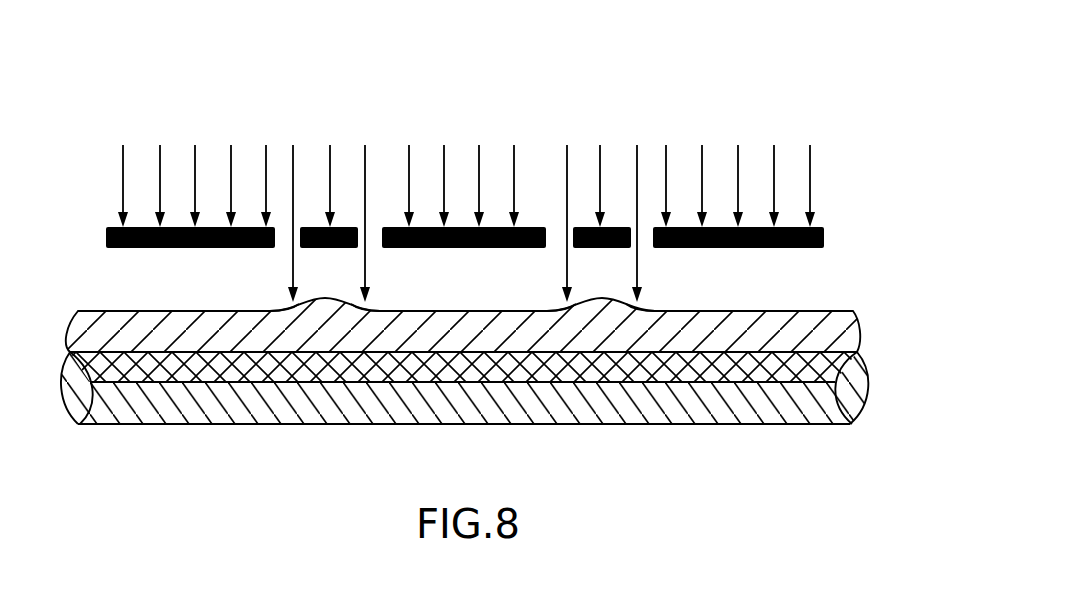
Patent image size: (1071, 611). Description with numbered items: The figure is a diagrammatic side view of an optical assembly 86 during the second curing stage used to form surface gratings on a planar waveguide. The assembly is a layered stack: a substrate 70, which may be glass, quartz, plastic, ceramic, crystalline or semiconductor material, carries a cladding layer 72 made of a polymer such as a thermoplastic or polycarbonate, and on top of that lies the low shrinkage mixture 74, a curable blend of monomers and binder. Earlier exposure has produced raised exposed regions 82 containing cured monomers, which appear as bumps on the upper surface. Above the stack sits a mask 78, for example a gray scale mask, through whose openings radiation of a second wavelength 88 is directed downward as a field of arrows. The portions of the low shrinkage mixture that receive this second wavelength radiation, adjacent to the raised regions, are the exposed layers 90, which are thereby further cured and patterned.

The substrate 70 is at (823, 413).
The cladding layer 72 is at (823, 368).
The low shrinkage mixture 74 is at (844, 320).
The mask 78 is at (106, 238).
The exposed regions 82 is at (602, 296).
The optical assembly 86 is at (776, 56).
The radiation of second wavelength 88 is at (565, 162).
The low shrinkage mixture layers exposed to second wavelength radiation 90 is at (650, 305).